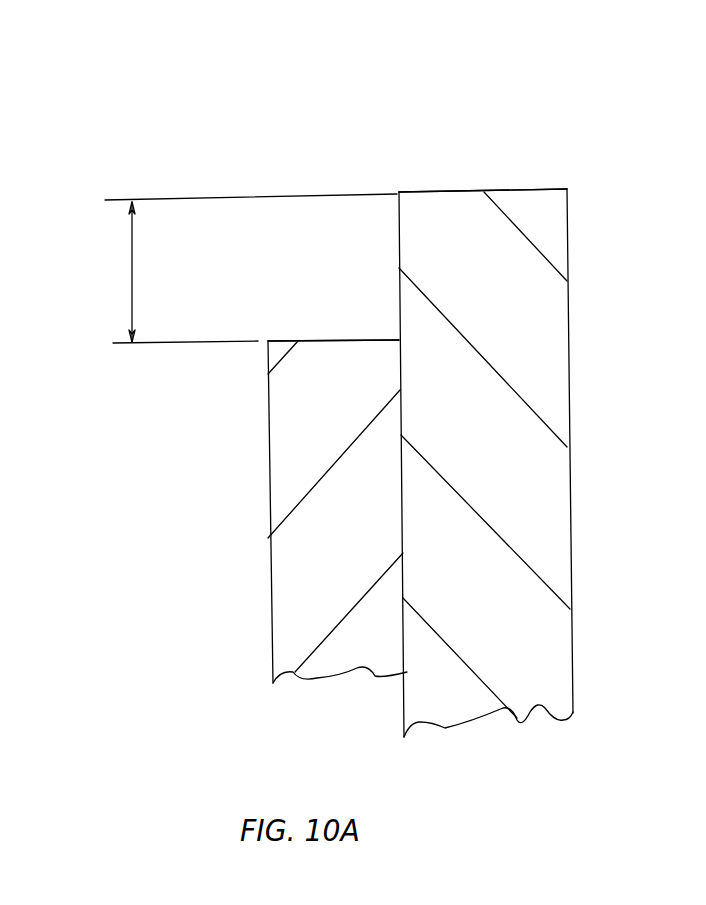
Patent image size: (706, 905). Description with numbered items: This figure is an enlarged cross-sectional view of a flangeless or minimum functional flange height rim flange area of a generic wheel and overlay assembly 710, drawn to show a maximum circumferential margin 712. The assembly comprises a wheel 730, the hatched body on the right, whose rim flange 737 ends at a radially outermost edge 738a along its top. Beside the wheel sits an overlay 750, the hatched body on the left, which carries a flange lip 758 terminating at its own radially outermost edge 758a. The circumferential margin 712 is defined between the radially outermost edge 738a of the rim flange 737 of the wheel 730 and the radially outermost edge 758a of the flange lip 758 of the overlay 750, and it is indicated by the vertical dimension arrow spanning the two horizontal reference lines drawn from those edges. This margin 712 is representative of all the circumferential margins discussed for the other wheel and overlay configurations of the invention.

The wheel and overlay assembly 710 is at (306, 146).
The maximum circumferential margin 712 is at (138, 269).
The wheel 730 is at (579, 685).
The rim flange 737 is at (525, 530).
The radially outermost edge of rim flange 738a is at (483, 192).
The overlay 750 is at (259, 663).
The flange lip 758 is at (332, 553).
The radially outermost edge of flange lip 758a is at (327, 340).